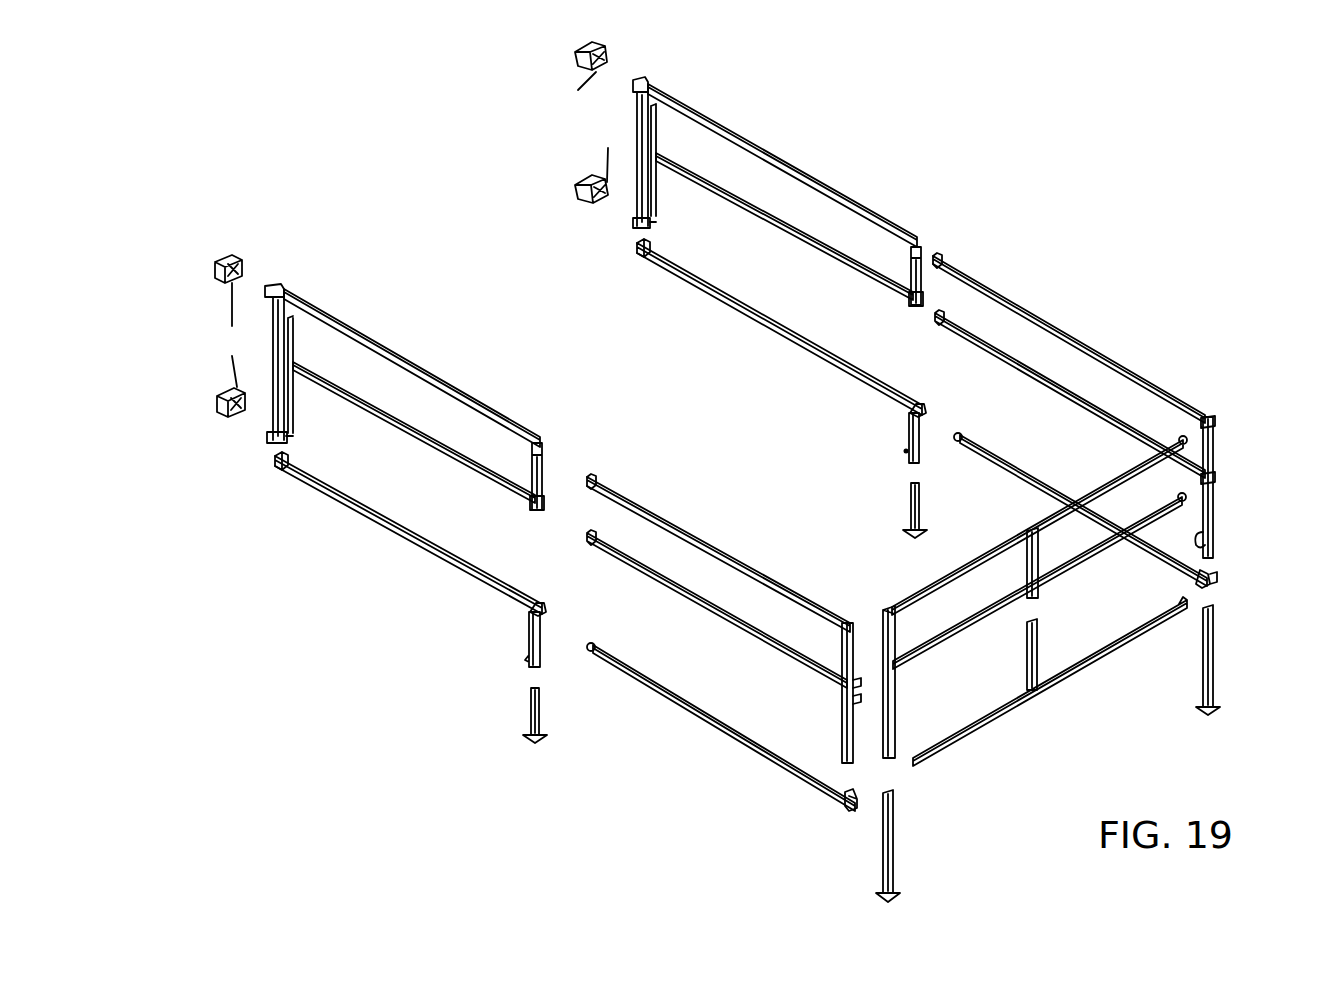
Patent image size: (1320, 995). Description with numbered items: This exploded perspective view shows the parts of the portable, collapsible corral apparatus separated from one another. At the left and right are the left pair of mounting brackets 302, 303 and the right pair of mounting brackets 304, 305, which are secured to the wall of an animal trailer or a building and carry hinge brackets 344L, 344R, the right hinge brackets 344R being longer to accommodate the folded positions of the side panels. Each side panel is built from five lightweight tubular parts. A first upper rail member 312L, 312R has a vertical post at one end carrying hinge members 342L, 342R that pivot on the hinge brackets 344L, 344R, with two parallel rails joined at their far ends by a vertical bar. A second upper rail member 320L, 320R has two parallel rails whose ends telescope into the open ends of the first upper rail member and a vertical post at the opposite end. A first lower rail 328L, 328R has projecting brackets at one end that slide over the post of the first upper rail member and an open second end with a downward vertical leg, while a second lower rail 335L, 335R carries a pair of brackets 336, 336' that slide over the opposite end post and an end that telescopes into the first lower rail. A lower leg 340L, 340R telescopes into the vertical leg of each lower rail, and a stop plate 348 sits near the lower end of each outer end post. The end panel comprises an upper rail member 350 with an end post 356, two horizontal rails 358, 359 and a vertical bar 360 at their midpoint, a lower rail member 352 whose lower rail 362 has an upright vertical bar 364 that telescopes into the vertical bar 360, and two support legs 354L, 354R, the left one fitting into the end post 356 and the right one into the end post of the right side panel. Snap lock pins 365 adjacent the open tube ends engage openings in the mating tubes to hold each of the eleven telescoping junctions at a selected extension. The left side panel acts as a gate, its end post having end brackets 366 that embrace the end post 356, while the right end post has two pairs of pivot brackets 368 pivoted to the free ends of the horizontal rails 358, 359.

The mounting bracket 302 is at (240, 256).
The mounting bracket 303 is at (217, 404).
The mounting bracket 304 is at (575, 56).
The mounting bracket 305 is at (576, 186).
The first upper rail member 312L is at (442, 360).
The first upper rail member 312R is at (779, 142).
The second upper rail member 320L is at (727, 522).
The second upper rail member 320R is at (1048, 291).
The first lower rail 328L is at (398, 541).
The first lower rail 328R is at (758, 320).
The second lower rail 335L is at (670, 682).
The second lower rail 335R is at (1033, 446).
The bracket 336 is at (823, 813).
The bracket 336' is at (1248, 573).
The lower leg 340L is at (530, 713).
The lower leg 340R is at (910, 505).
The hinge member 342L is at (282, 290).
The hinge member 342R is at (642, 81).
The hinge bracket 344L is at (210, 335).
The hinge bracket 344R is at (587, 127).
The stop plate 348 is at (1210, 531).
The upper rail member 350 is at (954, 552).
The lower rail member 352 is at (1026, 722).
The support leg 354L is at (893, 840).
The support leg 354R is at (1215, 651).
The end post 356 is at (897, 695).
The horizontal rail 358 is at (1090, 484).
The horizontal rail 359 is at (1082, 556).
The vertical bar 360 is at (1026, 568).
The lower rail 362 is at (1112, 662).
The vertical bar 364 is at (1039, 656).
The snap lock pin 365 is at (905, 452).
The end bracket 366 is at (845, 690).
The pivot bracket 368 is at (1214, 416).